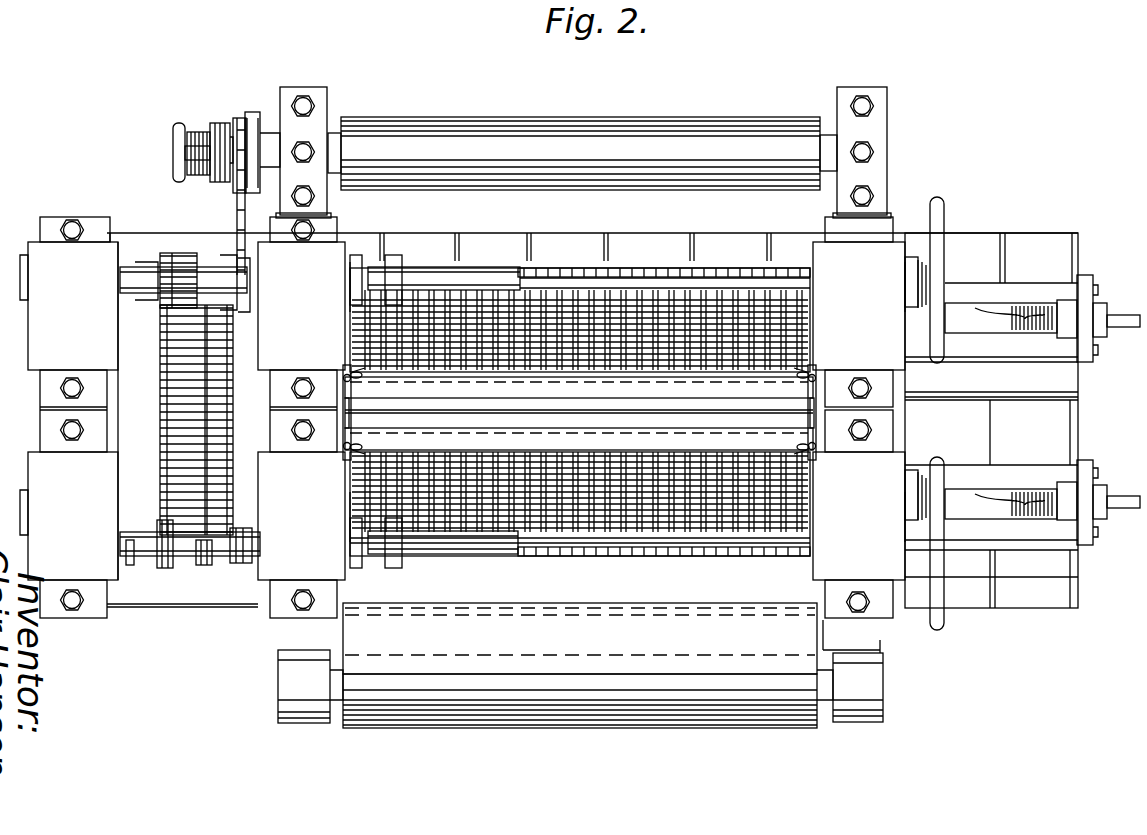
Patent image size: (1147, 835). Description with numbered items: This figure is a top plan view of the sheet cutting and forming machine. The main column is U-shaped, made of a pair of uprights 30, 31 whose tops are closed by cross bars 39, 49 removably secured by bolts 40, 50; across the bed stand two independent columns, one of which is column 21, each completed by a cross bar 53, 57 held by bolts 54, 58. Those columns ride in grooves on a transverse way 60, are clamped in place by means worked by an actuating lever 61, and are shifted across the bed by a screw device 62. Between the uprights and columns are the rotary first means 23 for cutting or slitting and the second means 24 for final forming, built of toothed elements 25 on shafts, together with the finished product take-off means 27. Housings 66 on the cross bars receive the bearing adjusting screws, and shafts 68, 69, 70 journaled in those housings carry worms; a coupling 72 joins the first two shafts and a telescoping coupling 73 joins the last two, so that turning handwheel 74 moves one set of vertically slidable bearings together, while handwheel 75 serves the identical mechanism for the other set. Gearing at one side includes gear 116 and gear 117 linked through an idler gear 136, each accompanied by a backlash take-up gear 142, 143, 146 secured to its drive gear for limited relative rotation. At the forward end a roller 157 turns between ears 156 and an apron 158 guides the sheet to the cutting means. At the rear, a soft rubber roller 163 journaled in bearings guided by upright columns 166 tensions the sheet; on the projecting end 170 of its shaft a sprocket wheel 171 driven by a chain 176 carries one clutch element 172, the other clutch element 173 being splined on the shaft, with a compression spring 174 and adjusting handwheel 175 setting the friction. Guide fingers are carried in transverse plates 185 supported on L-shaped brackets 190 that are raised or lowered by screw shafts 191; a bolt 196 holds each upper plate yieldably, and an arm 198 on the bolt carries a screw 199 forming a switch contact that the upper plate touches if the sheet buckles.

The column 21 is at (893, 613).
The first means 23 is at (649, 566).
The second means 24 is at (713, 265).
The elements 25 is at (648, 270).
The finished product take-off means 27 is at (256, 97).
The upright 30 is at (57, 622).
The upright 31 is at (267, 607).
The cross bar 39 is at (97, 230).
The bolts 40 is at (78, 228).
The cross bar 49 is at (340, 245).
The bolts 50 is at (312, 232).
The cross bar 53 is at (887, 427).
The bolts 54 is at (863, 430).
The cross bar 57 is at (880, 395).
The bolts 58 is at (863, 230).
The way 60 is at (1060, 383).
The actuating lever 61 is at (958, 317).
The screw device 62 is at (1047, 308).
The housings 66 is at (55, 265).
The shaft 68 is at (133, 562).
The shaft 69 is at (200, 560).
The shaft 70 is at (718, 540).
The coupling 72 is at (167, 572).
The coupling 73 is at (402, 553).
The handwheel 74 is at (943, 618).
The handwheel 75 is at (937, 203).
The gear 116 is at (167, 540).
The gear 117 is at (187, 280).
The idler gear 136 is at (165, 380).
The backlash take-up gear 142 is at (222, 540).
The backlash take-up gear 143 is at (220, 303).
The backlash take-up gear 146 is at (222, 385).
The ears 156 is at (295, 713).
The roller 157 is at (423, 713).
The apron 158 is at (638, 645).
The soft rubber roller 163 is at (710, 130).
The upright columns 166 is at (888, 105).
The projecting end 170 is at (262, 118).
The sprocket wheel 171 is at (238, 123).
The clutch element 172 is at (223, 122).
The clutch element 173 is at (210, 177).
The compression spring 174 is at (200, 137).
The adjusting handwheel 175 is at (178, 137).
The chain 176 is at (240, 208).
The plate 185 is at (635, 401).
The L-shaped bracket 190 is at (340, 457).
The screw shaft 191 is at (343, 375).
The bolt 196 is at (351, 437).
The arm 198 is at (362, 375).
The screw 199 is at (360, 377).